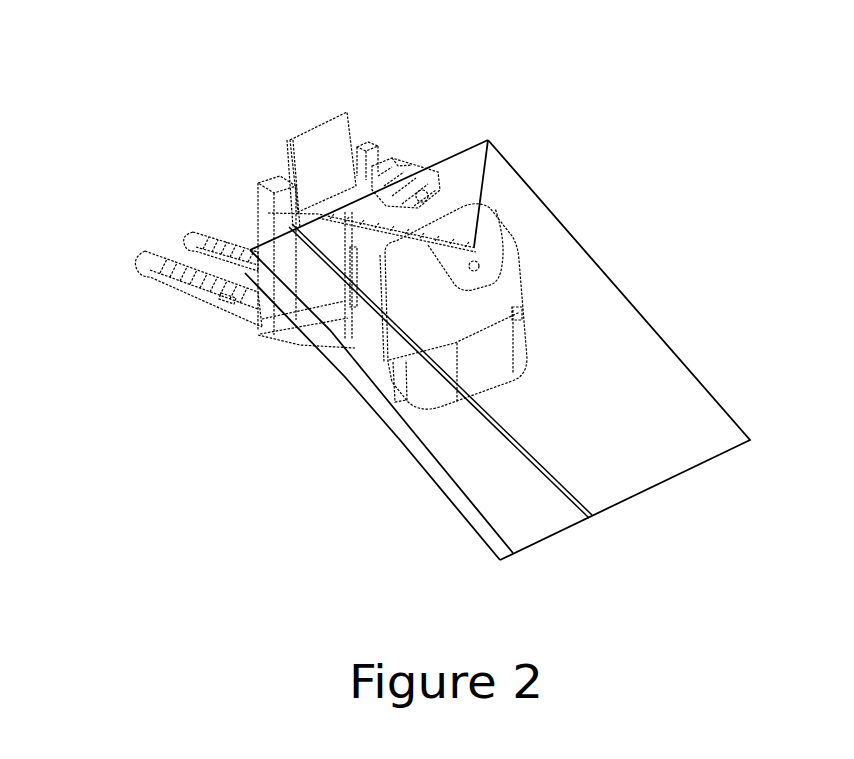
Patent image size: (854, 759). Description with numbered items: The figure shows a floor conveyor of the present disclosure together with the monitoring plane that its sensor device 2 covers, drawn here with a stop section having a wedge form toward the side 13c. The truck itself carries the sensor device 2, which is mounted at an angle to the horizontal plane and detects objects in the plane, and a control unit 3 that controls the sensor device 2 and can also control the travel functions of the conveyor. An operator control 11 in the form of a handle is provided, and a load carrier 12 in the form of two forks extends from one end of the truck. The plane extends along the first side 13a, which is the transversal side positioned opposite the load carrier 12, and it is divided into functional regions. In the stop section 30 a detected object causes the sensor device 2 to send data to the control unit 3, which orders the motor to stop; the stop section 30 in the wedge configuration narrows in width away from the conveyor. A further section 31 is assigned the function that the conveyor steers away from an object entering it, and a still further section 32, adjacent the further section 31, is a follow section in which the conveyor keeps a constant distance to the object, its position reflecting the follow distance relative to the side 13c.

The sensor device 2 is at (478, 248).
The control unit 3 is at (418, 168).
The operator control 11 is at (412, 166).
The load carrier 12 is at (153, 258).
The first side 13a is at (489, 368).
The side 13c is at (302, 352).
The stop section 30 is at (500, 350).
The further section 31 is at (440, 371).
The still further section 32 is at (412, 450).